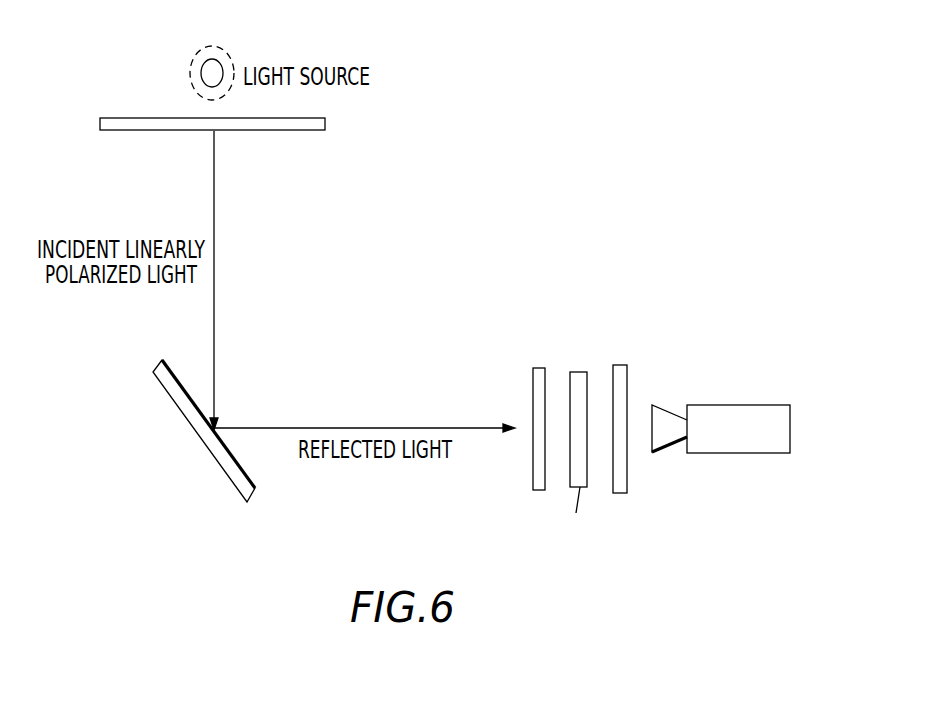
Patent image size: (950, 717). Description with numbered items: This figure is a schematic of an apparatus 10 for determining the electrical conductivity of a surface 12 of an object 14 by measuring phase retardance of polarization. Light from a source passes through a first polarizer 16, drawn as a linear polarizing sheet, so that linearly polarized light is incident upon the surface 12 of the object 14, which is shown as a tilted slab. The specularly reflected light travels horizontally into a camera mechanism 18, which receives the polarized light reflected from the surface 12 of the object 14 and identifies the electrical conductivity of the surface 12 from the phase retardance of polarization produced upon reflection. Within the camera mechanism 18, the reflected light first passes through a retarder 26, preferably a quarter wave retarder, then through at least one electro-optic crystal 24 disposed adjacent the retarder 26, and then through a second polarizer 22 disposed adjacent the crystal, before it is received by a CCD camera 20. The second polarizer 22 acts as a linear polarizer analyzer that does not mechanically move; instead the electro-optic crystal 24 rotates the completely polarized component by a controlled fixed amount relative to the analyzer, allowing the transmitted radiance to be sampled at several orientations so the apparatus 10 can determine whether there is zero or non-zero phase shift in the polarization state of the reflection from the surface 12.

The apparatus 10 is at (609, 206).
The surface 12 is at (168, 360).
The object 14 is at (165, 391).
The first polarizer 16 is at (113, 118).
The camera mechanism 18 is at (603, 440).
The CCD camera 20 is at (790, 412).
The second polarizer 22 is at (614, 365).
The electro-optic crystal 24 is at (576, 372).
The retarder 26 is at (540, 368).